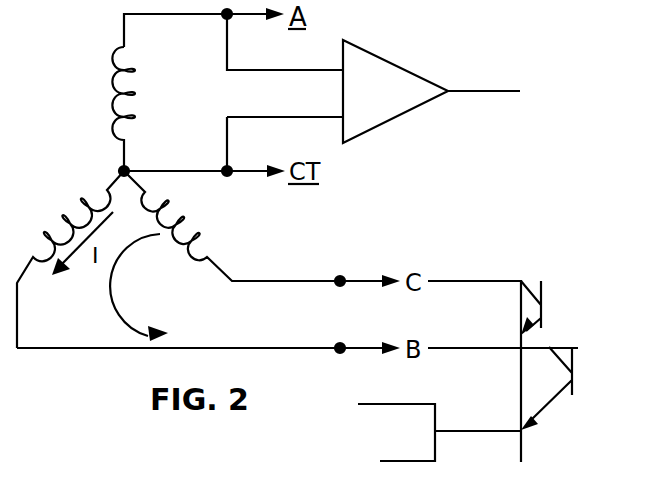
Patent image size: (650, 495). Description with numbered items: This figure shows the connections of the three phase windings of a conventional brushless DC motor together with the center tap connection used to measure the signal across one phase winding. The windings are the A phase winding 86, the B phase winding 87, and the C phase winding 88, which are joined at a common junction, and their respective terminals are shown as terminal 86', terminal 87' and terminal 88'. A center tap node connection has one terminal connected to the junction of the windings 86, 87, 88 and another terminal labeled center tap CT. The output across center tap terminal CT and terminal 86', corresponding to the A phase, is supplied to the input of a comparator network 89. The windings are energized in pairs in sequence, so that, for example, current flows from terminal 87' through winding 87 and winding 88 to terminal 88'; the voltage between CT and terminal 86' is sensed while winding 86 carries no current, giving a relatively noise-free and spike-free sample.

The A phase winding 86 is at (152, 109).
The terminal of A phase winding 86' is at (255, 36).
The B phase winding 87 is at (70, 241).
The terminal of B phase winding 87' is at (315, 326).
The C phase winding 88 is at (232, 226).
The terminal of C phase winding 88' is at (315, 260).
The comparator network 89 is at (423, 36).